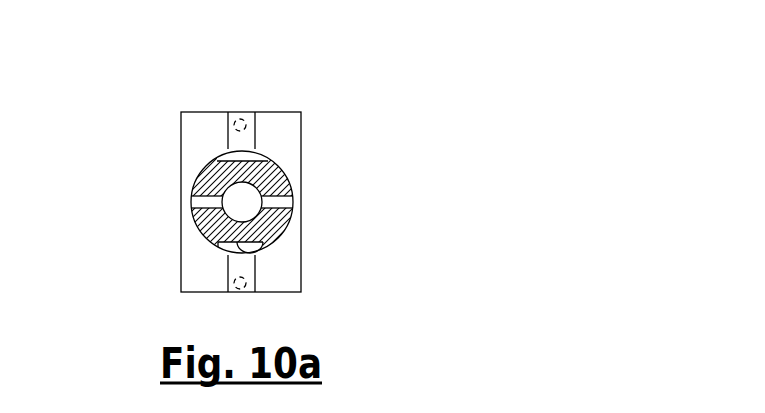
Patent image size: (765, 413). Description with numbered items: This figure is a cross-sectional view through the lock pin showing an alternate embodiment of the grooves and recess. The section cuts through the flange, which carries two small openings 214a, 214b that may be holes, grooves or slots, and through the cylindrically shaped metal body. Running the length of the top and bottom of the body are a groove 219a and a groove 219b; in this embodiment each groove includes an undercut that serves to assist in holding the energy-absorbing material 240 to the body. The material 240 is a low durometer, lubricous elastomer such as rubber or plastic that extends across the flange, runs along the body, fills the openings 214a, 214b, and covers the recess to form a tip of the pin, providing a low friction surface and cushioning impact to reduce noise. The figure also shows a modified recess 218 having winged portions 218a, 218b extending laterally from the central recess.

The opening 214a is at (240, 118).
The opening 214b is at (235, 286).
The recess 218 is at (283, 190).
The winged portion 218a is at (197, 202).
The winged portion 218b is at (285, 202).
The groove 219a is at (243, 160).
The groove 219b is at (257, 250).
The energy-absorbing material 240 is at (258, 153).